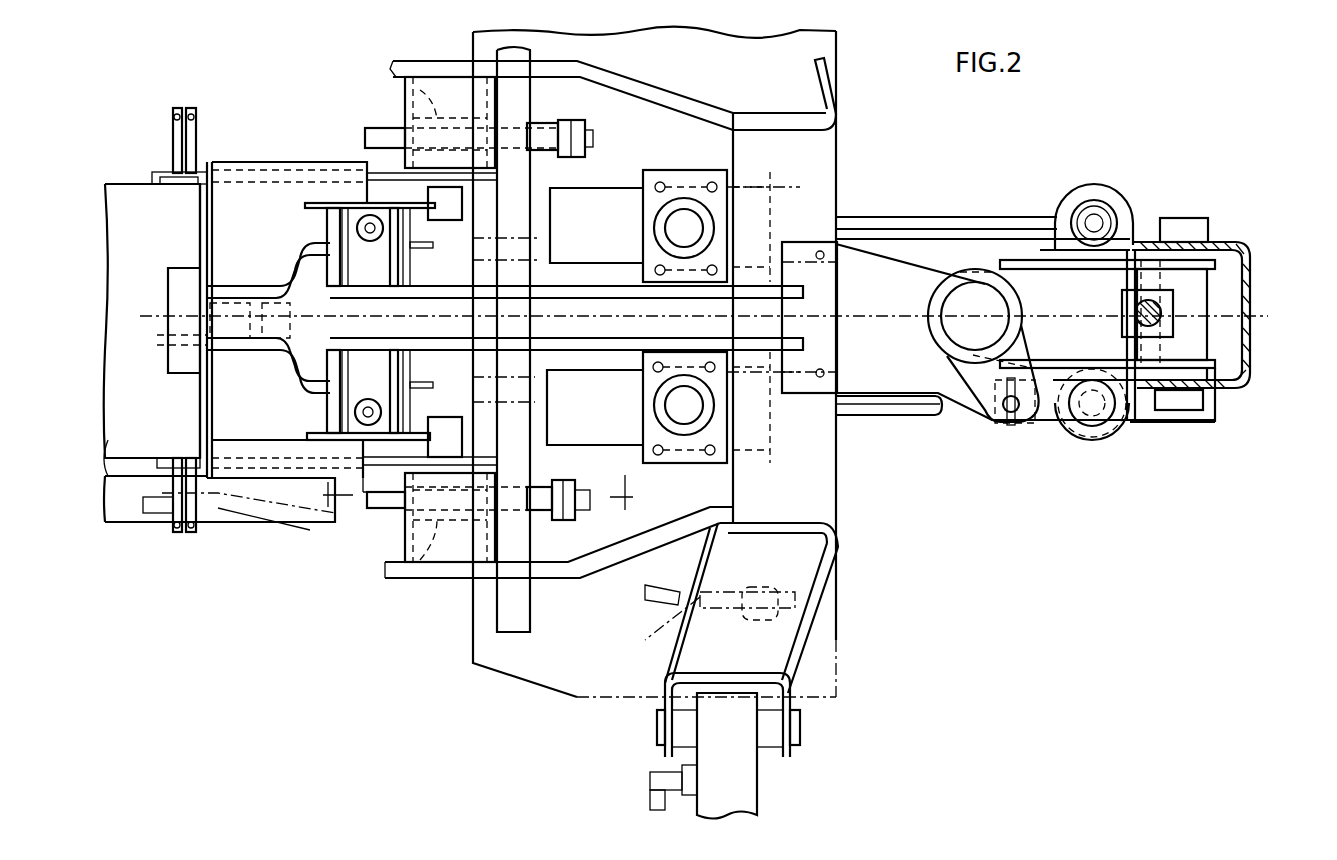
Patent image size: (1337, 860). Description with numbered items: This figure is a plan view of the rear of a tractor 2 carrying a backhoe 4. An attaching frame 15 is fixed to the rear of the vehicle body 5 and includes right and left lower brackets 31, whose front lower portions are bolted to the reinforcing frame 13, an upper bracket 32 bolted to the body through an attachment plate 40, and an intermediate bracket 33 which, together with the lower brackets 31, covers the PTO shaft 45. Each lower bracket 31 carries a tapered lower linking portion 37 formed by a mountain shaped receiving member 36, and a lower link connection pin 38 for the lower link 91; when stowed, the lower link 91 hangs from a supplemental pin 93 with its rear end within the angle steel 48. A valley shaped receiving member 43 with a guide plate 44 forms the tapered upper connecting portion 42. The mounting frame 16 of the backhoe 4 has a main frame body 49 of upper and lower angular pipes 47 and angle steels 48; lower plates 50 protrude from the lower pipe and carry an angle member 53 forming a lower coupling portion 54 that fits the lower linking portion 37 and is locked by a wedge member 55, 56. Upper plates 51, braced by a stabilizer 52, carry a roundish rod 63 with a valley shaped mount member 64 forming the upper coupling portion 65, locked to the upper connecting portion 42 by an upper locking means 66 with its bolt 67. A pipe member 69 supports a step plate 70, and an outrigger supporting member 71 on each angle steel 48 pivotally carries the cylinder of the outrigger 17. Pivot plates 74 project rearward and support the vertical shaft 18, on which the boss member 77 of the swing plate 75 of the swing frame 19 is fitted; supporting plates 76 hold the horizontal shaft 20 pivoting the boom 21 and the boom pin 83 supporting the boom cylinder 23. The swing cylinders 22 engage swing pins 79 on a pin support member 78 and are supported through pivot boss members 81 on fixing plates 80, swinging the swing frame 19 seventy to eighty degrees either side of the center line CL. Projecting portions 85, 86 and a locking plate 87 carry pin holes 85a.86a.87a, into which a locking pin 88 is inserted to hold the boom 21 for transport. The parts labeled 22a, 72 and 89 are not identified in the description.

The tractor 2 is at (136, 148).
The backhoe 4 is at (975, 115).
The vehicle body 5 is at (128, 440).
The reinforcing frame 13 is at (128, 522).
The attaching frame 15 is at (252, 158).
The mounting frame 16 is at (468, 605).
The outrigger 17 is at (802, 738).
The vertical shaft 18 is at (962, 300).
The swing frame 19 is at (1090, 148).
The horizontal shaft 20 is at (1200, 230).
The boom 21 is at (1252, 285).
The swing cylinder 22 is at (625, 300).
The shaft arm 22a is at (1005, 222).
The boom cylinder 23 is at (1160, 308).
The lower bracket 31 is at (342, 500).
The upper bracket 32 is at (258, 300).
The intermediate bracket 33 is at (207, 437).
The mountain shaped receiving member 36 is at (402, 520).
The lower linking portion 37 is at (395, 72).
The lower link connection pin 38 is at (197, 535).
The attachment plate 40 is at (170, 292).
The upper connecting portion 42 is at (322, 216).
The valley shaped receiving member 43 is at (320, 390).
The guide plate 44 is at (315, 435).
The PTO shaft 45 is at (168, 343).
The angular pipe 47 is at (830, 530).
The angle steel 48 is at (838, 95).
The main frame body 49 is at (893, 505).
The lower plate 50 is at (614, 100).
The upper plate 51 is at (648, 300).
The stabilizer 52 is at (452, 300).
The angle member 53 is at (500, 110).
The lower coupling portion 54 is at (403, 100).
The wedge member 55 is at (365, 137).
The wedge member 56 is at (380, 515).
The roundish rod 63 is at (350, 318).
The valley shaped mount member 64 is at (345, 372).
The upper coupling portion 65 is at (412, 244).
The upper locking means 66 is at (378, 240).
The bolt 67 is at (372, 240).
The pipe member 69 is at (525, 212).
The step plate 70 is at (600, 697).
The outrigger supporting member 71 is at (792, 682).
The roller 72 is at (750, 790).
The pivot plate 74 is at (850, 262).
The swing plate 75 is at (1020, 250).
The supporting plate 76 is at (1060, 250).
The boss member 77 is at (940, 300).
The pin support member 78 is at (1138, 235).
The swing pin 79 is at (684, 226).
The fixing plate 80 is at (645, 235).
The pivot boss member 81 is at (720, 220).
The boom pin 83 is at (1125, 285).
The projecting portion 85 is at (985, 412).
The pin holes 85a.86a.87a is at (1013, 425).
The projecting portion 86 is at (1038, 420).
The locking plate 87 is at (1192, 415).
The locking pin 88 is at (1008, 422).
The bar 89 is at (963, 417).
The lower link 91 is at (250, 500).
The supplemental pin 93 is at (180, 535).
The center line CL is at (704, 351).